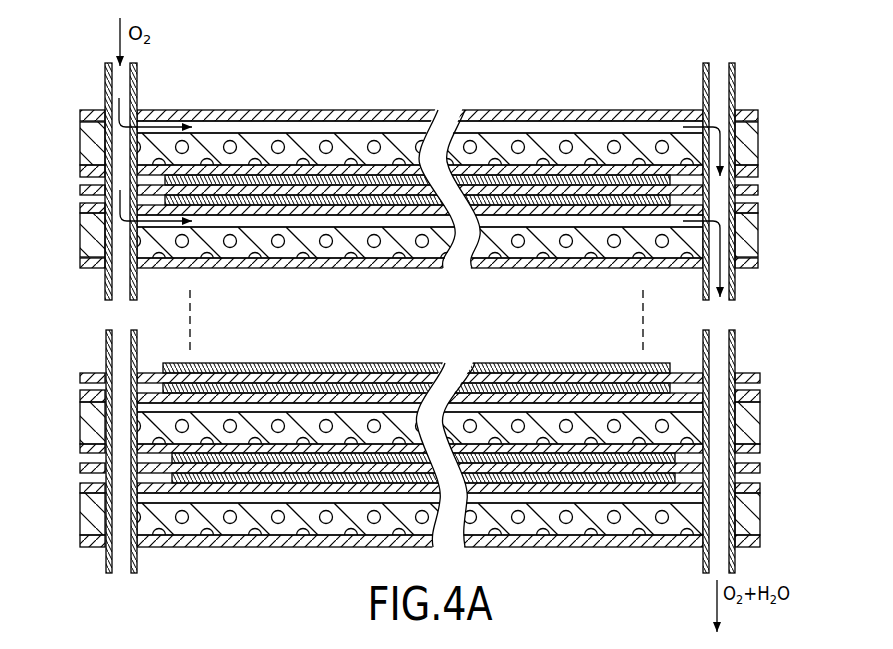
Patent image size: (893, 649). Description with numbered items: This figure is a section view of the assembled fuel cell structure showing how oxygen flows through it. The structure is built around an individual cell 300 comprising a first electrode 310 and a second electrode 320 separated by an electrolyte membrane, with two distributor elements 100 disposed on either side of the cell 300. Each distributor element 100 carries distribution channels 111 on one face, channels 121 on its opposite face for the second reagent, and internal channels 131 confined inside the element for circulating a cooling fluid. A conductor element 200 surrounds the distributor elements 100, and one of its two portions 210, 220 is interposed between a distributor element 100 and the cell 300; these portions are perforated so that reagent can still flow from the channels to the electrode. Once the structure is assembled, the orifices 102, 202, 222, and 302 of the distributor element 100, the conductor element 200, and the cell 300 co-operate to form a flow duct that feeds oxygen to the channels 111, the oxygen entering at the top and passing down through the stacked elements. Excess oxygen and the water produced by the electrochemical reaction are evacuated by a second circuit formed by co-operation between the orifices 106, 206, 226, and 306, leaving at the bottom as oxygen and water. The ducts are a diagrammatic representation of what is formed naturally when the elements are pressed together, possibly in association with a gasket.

The distributor element 100 is at (80, 132).
The conductor element 200 is at (752, 107).
The individual cell 300 is at (766, 185).
The portion of the conductor element 210 is at (205, 115).
The portion of the conductor element 220 is at (80, 172).
The distribution channels 111 is at (372, 128).
The channels 121 is at (242, 160).
The channels 131 is at (548, 138).
The first electrode 310 is at (620, 140).
The second electrode 320 is at (682, 160).
The orifice 302 is at (131, 467).
The orifice 202 is at (102, 488).
The orifice 102 is at (98, 526).
The orifice 306 is at (716, 466).
The orifice 206 is at (735, 480).
The orifice 106 is at (735, 517).
The orifice 222 is at (124, 540).
The orifice 226 is at (706, 568).